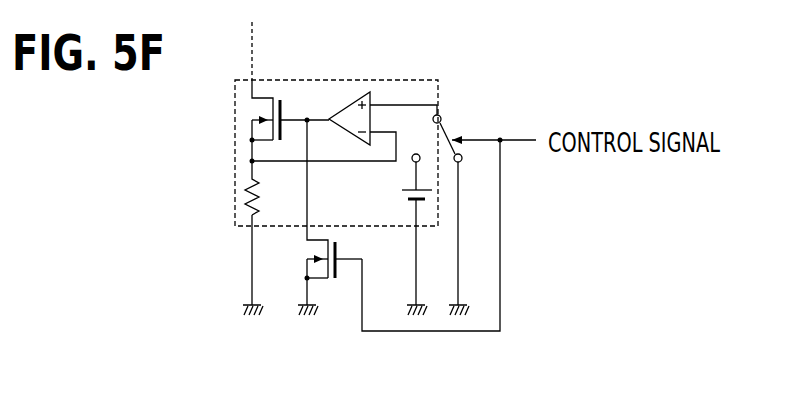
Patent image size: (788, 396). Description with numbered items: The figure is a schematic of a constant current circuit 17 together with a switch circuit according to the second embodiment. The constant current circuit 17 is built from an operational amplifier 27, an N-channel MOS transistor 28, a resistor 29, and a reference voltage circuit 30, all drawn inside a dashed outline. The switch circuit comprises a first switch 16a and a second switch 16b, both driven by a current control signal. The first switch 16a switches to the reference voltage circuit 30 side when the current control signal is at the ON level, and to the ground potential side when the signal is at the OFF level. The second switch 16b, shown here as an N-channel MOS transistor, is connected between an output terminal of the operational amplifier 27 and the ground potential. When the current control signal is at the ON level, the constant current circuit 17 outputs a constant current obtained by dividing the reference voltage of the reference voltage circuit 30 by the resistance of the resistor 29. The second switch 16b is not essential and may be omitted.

The constant current circuit 17 is at (410, 80).
The N-channel MOS transistor 28 is at (268, 97).
The operational amplifier 27 is at (346, 109).
The resistor 29 is at (259, 192).
The reference voltage circuit 30 is at (402, 195).
The first switch 16a is at (447, 131).
The second switch 16b is at (338, 270).